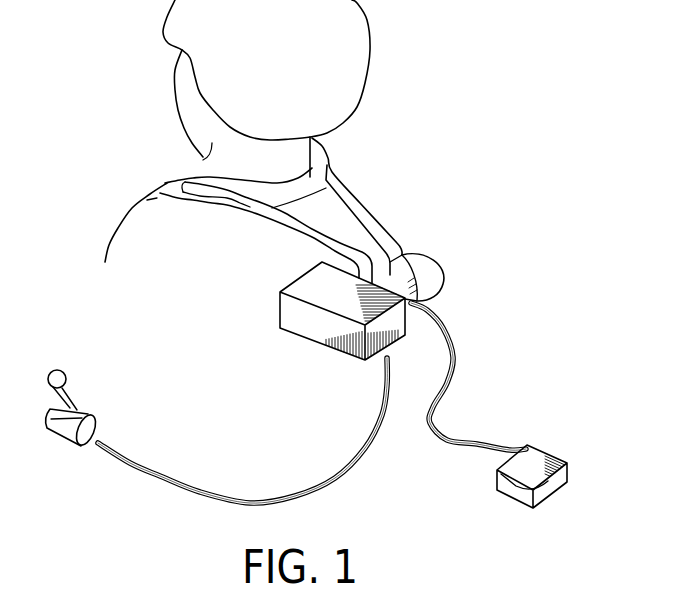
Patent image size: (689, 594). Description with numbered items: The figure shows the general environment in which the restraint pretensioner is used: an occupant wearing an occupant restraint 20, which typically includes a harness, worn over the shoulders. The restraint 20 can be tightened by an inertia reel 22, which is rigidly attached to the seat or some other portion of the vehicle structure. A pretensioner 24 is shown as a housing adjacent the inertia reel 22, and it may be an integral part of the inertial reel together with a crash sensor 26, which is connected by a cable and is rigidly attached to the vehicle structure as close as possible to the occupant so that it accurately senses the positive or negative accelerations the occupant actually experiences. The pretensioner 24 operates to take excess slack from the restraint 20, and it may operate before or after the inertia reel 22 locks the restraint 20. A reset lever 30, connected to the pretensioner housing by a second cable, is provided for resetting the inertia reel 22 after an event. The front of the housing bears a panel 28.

The occupant restraint 20 is at (167, 187).
The inertia reel 22 is at (441, 286).
The pretensioner 24 is at (304, 284).
The crash sensor 26 is at (537, 461).
The housing panel 28 is at (311, 329).
The reset lever 30 is at (83, 411).